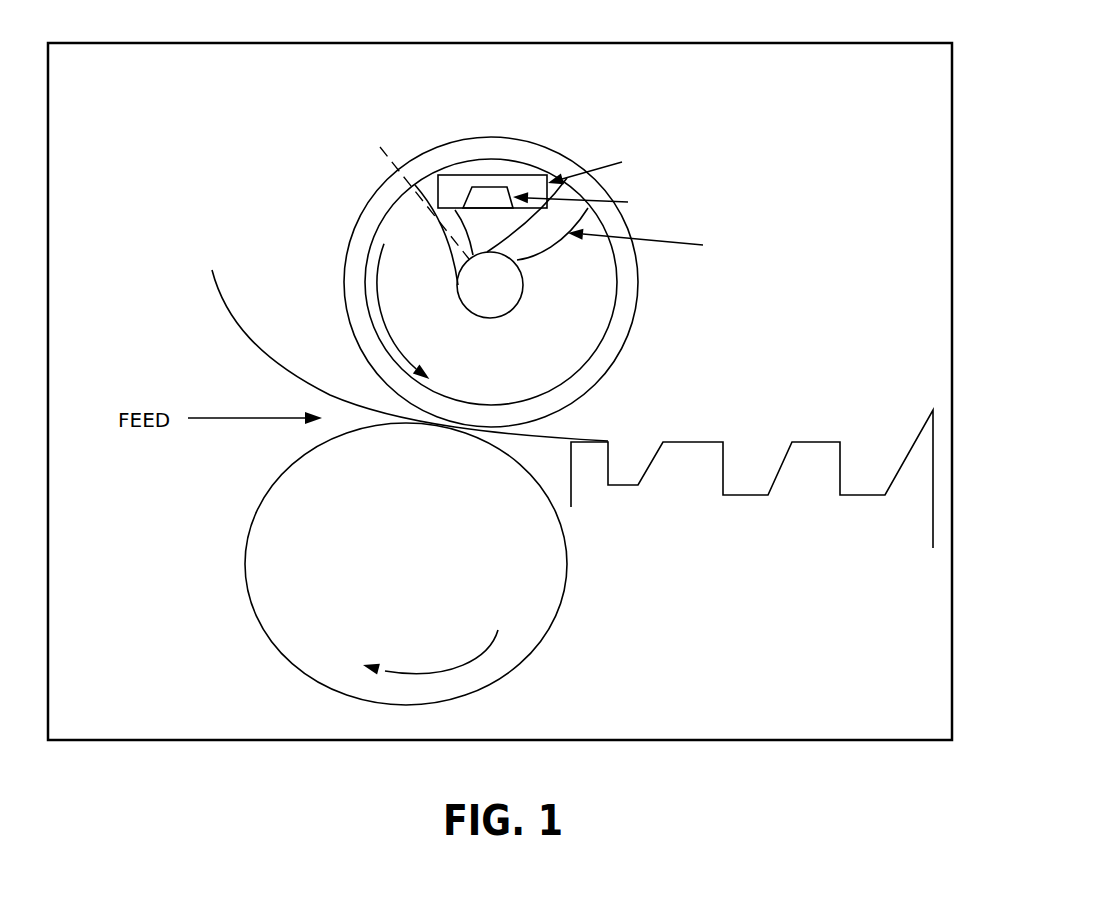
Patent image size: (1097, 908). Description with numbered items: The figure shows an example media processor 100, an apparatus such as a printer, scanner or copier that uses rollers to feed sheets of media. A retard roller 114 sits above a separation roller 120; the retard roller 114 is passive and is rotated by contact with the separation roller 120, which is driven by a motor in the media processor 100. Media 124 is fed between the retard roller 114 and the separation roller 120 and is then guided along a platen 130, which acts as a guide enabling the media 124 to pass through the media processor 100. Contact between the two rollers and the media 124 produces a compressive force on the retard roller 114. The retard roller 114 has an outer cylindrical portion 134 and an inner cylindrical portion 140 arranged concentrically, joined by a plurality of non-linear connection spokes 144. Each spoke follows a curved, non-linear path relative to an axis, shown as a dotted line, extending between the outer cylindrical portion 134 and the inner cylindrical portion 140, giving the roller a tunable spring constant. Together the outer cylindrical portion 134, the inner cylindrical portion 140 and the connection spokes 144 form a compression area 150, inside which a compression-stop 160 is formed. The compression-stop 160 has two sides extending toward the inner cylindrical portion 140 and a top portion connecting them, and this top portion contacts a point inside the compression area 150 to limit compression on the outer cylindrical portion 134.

The media processor 100 is at (758, 43).
The retard roller 114 is at (583, 271).
The separation roller 120 is at (567, 557).
The media 124 is at (250, 338).
The platen 130 is at (820, 442).
The outer cylindrical portion 134 is at (622, 353).
The inner cylindrical portion 140 is at (517, 306).
The non-linear connection spokes 144 is at (449, 258).
The compression area 150 is at (501, 175).
The compression-stop 160 is at (485, 187).